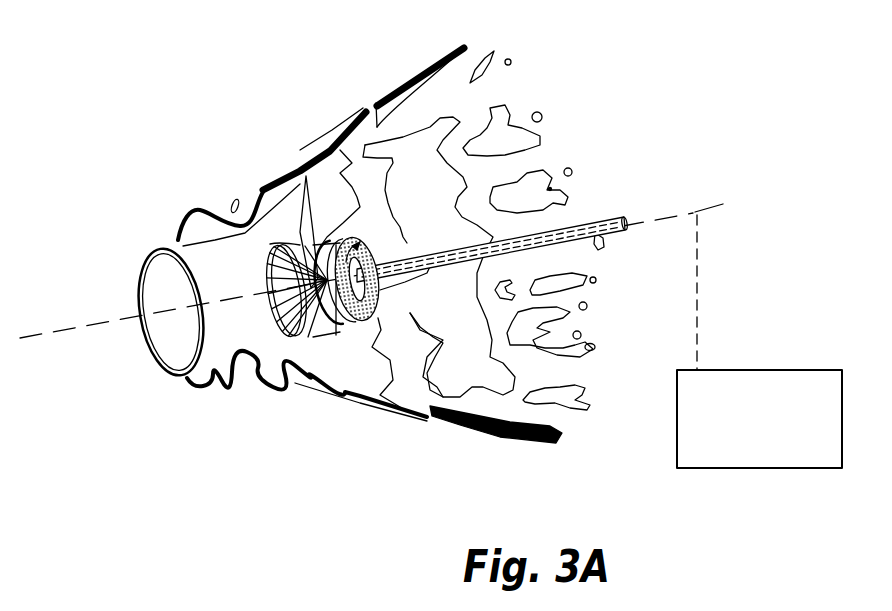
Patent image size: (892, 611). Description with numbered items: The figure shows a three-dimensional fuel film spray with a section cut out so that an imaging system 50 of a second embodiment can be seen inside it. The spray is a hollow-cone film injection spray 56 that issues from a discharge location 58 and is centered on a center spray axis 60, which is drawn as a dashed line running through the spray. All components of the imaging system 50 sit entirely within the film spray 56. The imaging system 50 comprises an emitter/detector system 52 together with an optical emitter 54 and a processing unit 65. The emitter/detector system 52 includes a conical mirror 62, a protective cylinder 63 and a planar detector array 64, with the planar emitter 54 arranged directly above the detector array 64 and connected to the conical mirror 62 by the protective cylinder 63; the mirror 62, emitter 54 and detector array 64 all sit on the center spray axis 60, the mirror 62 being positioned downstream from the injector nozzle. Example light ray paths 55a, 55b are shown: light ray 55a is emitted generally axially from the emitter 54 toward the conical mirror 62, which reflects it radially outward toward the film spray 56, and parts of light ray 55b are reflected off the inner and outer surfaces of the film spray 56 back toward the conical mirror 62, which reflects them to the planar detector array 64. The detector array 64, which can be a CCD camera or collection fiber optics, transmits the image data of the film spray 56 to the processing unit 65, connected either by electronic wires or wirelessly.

The imaging system 50 is at (710, 157).
The emitter/detector system 52 is at (348, 356).
The optical emitter 54 is at (390, 258).
The light ray path 55a is at (384, 175).
The light ray path 55b is at (382, 175).
The hollow-cone film injection spray 56 is at (256, 136).
The discharge location 58 is at (140, 298).
The center spray axis 60 is at (58, 333).
The conical mirror 62 is at (284, 315).
The protective cylinder 63 is at (270, 244).
The planar detector array 64 is at (383, 311).
The processing unit 65 is at (718, 468).